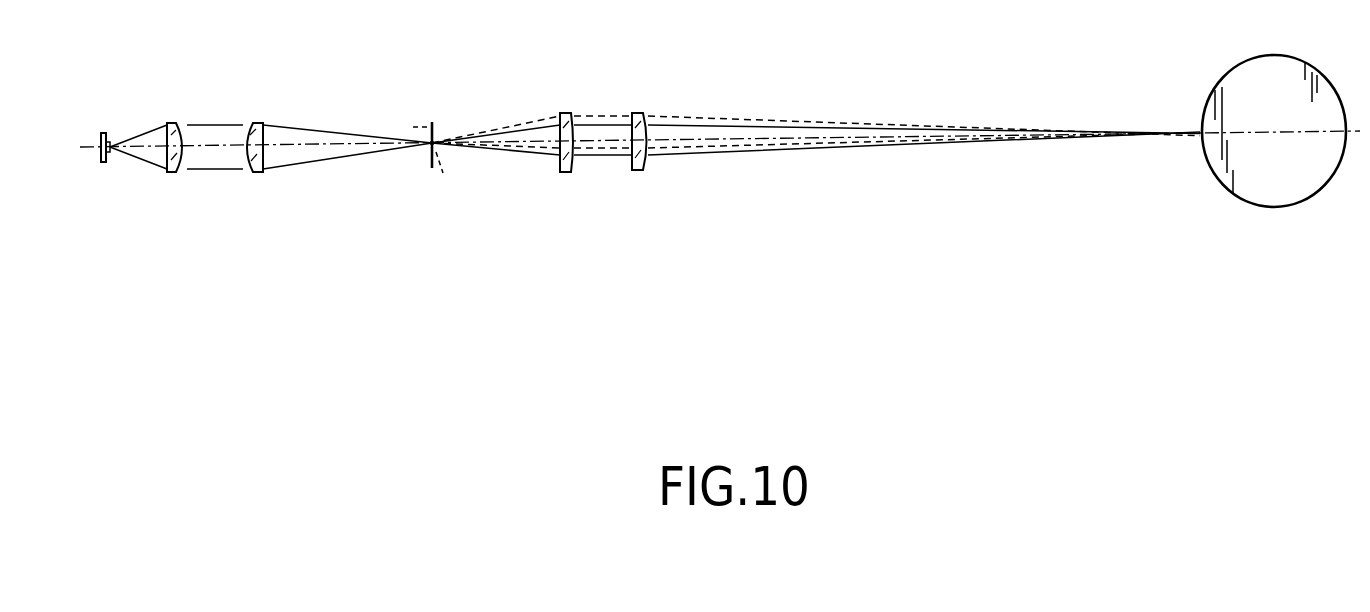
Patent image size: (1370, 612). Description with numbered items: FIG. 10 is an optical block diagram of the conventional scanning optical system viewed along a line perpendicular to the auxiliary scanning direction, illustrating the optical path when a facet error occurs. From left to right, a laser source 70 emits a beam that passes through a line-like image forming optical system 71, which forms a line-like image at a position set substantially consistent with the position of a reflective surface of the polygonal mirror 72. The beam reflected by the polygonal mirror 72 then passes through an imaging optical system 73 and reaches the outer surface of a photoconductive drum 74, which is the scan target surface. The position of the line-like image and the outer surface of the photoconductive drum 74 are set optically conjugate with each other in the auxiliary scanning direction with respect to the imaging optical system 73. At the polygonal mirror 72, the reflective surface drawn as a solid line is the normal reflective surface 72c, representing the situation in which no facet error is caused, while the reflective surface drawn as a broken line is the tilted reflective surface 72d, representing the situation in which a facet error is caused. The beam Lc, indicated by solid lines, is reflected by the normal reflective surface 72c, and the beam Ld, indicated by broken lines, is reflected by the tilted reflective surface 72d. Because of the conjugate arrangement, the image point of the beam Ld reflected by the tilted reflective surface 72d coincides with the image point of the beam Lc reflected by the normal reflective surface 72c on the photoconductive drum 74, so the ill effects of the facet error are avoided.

The laser source 70 is at (103, 163).
The line-like image forming optical system 71 is at (282, 185).
The polygonal mirror 72 is at (438, 180).
The normal reflective surface 72c is at (433, 127).
The tilted reflective surface 72d is at (420, 127).
The imaging optical system 73 is at (668, 178).
The photoconductive drum 74 is at (1275, 208).
The beam reflected by normal reflective surface Lc is at (769, 152).
The beam reflected by tilted reflective surface Ld is at (722, 117).